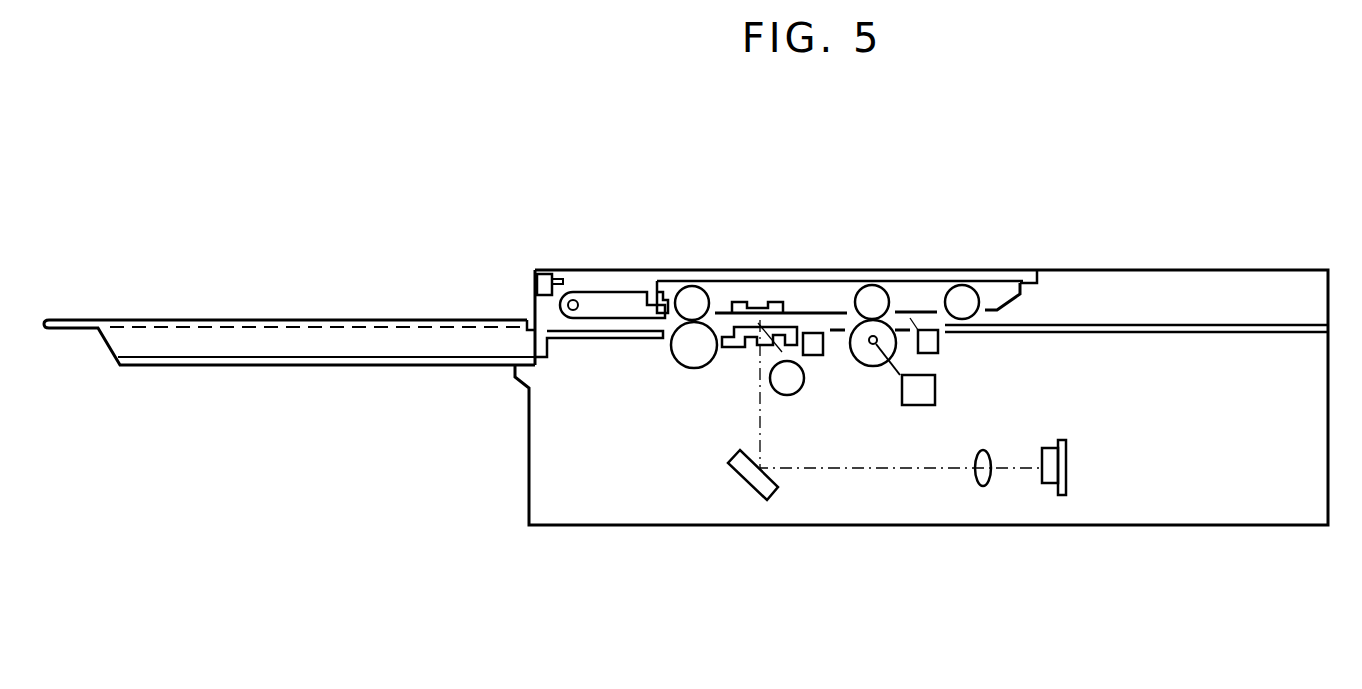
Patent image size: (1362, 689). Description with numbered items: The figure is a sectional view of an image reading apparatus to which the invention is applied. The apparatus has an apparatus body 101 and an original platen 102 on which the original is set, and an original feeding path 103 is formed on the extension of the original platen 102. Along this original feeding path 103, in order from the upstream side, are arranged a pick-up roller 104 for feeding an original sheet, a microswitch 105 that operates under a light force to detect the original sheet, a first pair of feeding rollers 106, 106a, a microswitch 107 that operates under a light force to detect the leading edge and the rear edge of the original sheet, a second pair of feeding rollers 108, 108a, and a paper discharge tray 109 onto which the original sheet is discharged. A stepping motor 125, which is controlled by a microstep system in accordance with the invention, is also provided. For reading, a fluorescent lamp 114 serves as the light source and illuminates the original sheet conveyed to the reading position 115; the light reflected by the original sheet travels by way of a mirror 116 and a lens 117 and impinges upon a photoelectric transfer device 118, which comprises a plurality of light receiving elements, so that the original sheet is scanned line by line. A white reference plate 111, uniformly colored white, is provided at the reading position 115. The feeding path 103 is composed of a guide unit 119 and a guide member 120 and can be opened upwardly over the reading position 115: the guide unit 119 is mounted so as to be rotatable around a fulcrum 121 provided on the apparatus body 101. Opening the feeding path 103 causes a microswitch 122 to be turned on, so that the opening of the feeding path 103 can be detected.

The apparatus body 101 is at (1116, 268).
The original platen 102 is at (1218, 325).
The original feeding path 103 is at (728, 312).
The pick-up roller 104 is at (968, 296).
The microswitch 105 is at (938, 342).
The feeding roller 106 is at (890, 360).
The feeding roller 106a is at (876, 300).
The microswitch 107 is at (813, 356).
The feeding roller 108 is at (690, 368).
The feeding roller 108a is at (688, 306).
The paper discharge tray 109 is at (258, 366).
The white reference plate 111 is at (776, 302).
The fluorescent lamp 114 is at (787, 395).
The reading position 115 is at (758, 323).
The mirror 116 is at (752, 478).
The lens 117 is at (985, 487).
The photoelectric transfer device 118 is at (1050, 484).
The guide unit 119 is at (659, 282).
The guide member 120 is at (866, 366).
The fulcrum 121 is at (578, 297).
The microswitch 122 is at (540, 273).
The stepping motor 125 is at (935, 392).